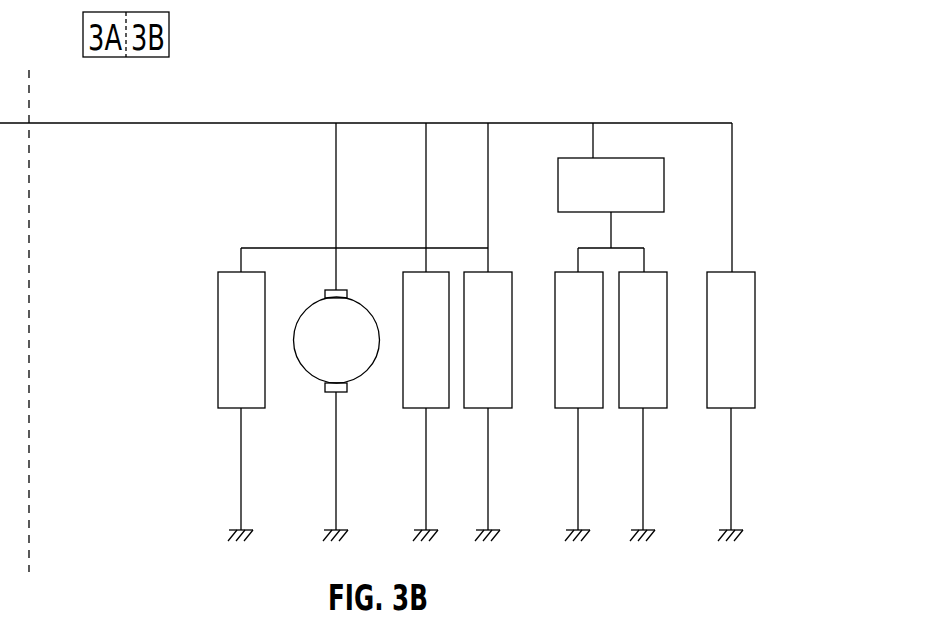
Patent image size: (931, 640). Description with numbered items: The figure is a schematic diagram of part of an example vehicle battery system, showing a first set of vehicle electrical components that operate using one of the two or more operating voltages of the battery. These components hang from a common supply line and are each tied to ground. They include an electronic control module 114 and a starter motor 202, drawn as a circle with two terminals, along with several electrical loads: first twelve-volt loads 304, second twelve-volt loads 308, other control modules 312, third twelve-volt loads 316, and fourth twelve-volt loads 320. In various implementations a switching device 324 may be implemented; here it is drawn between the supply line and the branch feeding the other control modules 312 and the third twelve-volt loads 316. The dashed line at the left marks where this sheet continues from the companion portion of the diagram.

The electronic control module 114 is at (218, 300).
The starter motor 202 is at (310, 305).
The first 12 V loads 304 is at (416, 410).
The second 12 V loads 308 is at (495, 272).
The other control modules 312 is at (570, 410).
The third 12 V loads 316 is at (650, 272).
The fourth 12 V loads 320 is at (755, 294).
The switching device 324 is at (620, 158).